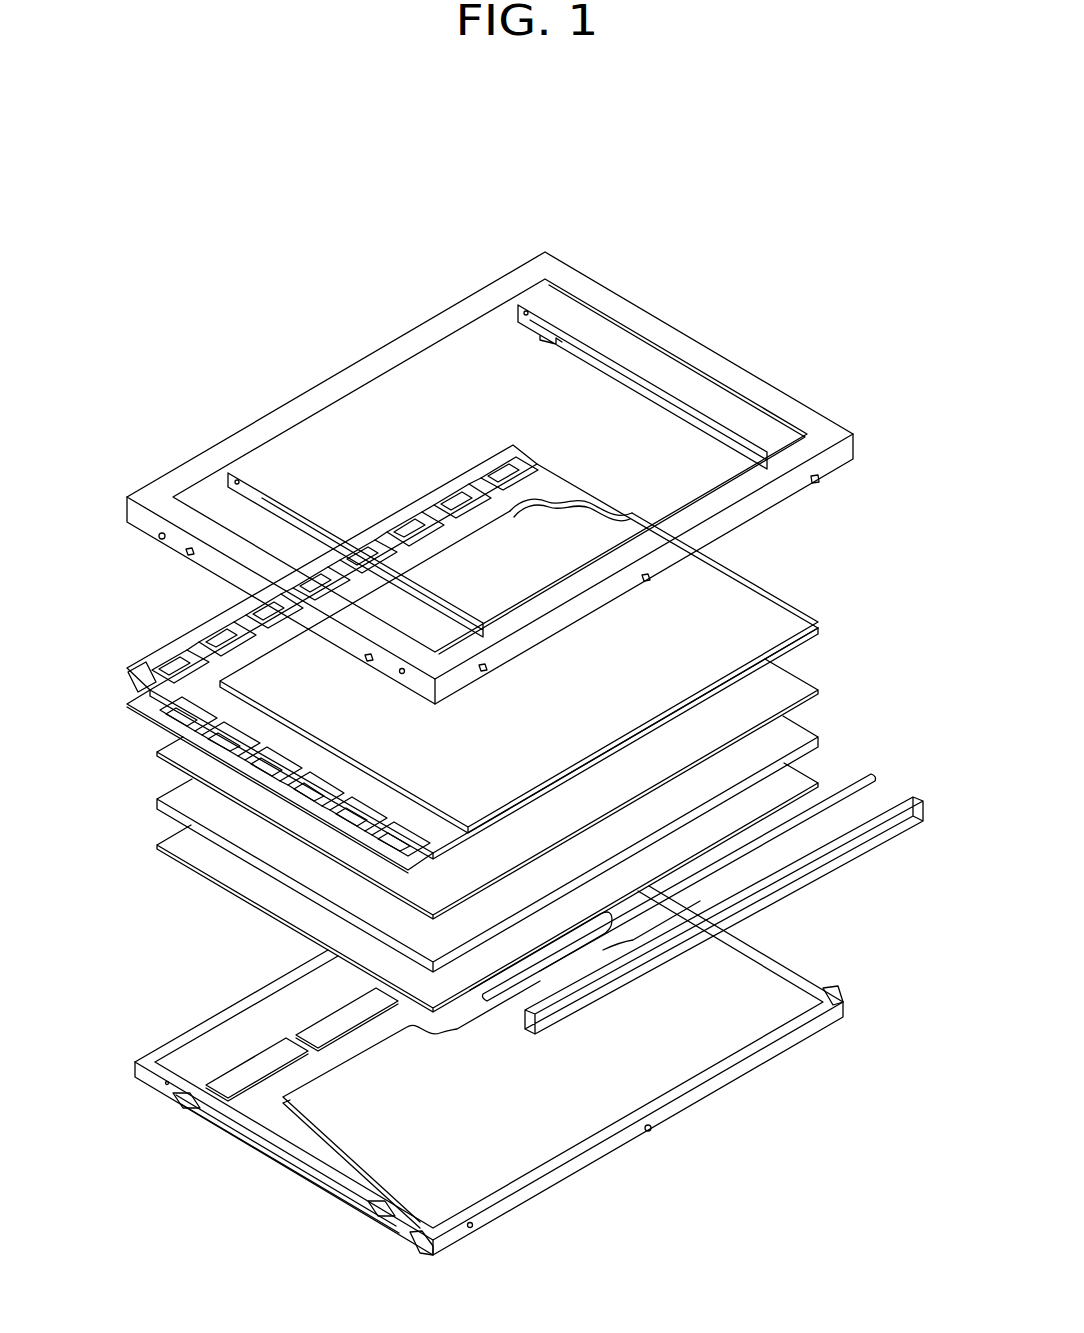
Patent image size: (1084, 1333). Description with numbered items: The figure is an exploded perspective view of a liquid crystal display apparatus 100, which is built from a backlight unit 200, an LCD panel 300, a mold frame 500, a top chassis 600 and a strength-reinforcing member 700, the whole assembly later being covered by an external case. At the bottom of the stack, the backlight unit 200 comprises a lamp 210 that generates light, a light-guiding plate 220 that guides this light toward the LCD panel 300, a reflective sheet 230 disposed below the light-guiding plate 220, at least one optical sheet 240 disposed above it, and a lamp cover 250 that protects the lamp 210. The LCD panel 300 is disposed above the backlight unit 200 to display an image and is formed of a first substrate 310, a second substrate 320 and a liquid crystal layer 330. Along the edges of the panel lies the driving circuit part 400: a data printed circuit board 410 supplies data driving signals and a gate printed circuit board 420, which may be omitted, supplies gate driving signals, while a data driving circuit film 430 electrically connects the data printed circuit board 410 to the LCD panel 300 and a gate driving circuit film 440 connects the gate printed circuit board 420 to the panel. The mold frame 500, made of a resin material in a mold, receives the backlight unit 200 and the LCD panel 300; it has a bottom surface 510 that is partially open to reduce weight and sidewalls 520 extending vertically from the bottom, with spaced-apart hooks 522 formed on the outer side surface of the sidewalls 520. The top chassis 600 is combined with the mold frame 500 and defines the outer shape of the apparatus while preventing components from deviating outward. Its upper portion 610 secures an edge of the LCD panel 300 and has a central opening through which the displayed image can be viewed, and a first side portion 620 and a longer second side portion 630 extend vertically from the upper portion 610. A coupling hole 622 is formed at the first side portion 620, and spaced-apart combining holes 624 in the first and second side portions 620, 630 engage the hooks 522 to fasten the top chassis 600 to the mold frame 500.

The LCD apparatus 100 is at (372, 284).
The backlight unit 200 is at (943, 848).
The lamp 210 is at (730, 864).
The light-guiding plate 220 is at (762, 782).
The reflective sheet 230 is at (762, 828).
The optical sheet 240 is at (742, 746).
The lamp cover 250 is at (724, 919).
The LCD panel 300 is at (518, 430).
The first substrate 310 is at (556, 480).
The second substrate 320 is at (618, 526).
The liquid crystal layer 330 is at (578, 506).
The driving circuit part 400 is at (201, 580).
The data printed circuit board 410 is at (205, 633).
The gate printed circuit board 420 is at (143, 706).
The data driving circuit film 430 is at (167, 656).
The gate driving circuit film 440 is at (142, 672).
The mold frame 500 is at (190, 984).
The bottom surface 510 is at (346, 1048).
The sidewalls 520 is at (606, 1160).
The hooks 522 is at (652, 1132).
The top chassis 600 is at (811, 390).
The upper portion 610 is at (702, 516).
The first side portion 620 is at (133, 508).
The coupling hole 622 is at (161, 530).
The combining holes 624 is at (820, 481).
The second side portion 630 is at (774, 498).
The strength-reinforcing member 700 is at (269, 482).